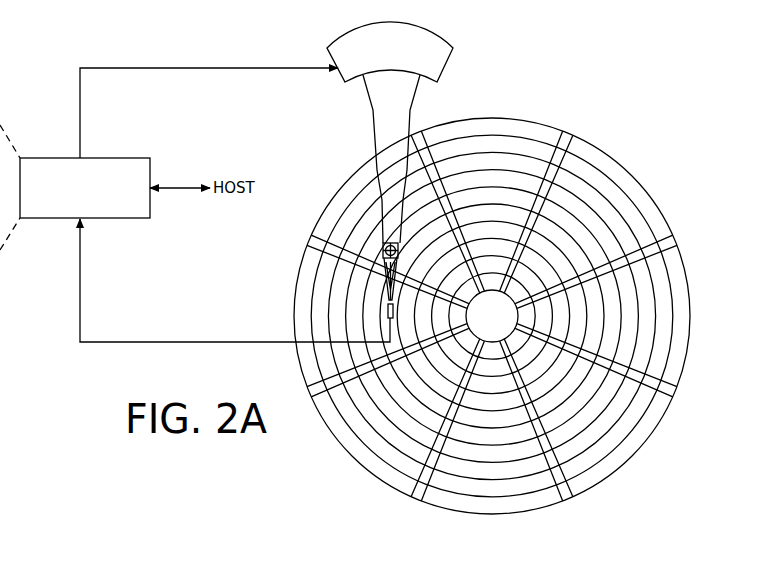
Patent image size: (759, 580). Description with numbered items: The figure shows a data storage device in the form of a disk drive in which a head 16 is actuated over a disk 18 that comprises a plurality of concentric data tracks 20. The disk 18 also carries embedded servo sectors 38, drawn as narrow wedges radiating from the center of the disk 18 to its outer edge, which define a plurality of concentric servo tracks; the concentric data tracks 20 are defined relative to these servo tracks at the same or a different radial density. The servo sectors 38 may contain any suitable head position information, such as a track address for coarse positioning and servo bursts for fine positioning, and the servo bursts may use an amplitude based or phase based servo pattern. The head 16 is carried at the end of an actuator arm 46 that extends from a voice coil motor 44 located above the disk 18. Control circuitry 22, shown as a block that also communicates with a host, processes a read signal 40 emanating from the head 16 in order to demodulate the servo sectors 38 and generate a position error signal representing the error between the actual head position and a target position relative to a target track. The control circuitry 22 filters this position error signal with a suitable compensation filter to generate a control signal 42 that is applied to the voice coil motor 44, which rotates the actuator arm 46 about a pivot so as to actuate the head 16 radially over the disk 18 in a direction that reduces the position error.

The head 16 is at (385, 312).
The disk 18 is at (629, 162).
The data tracks 20 is at (495, 141).
The control circuitry 22 is at (117, 158).
The servo sectors 38 is at (433, 142).
The read signal 40 is at (174, 342).
The control signal 42 is at (80, 119).
The voice coil motor 44 is at (347, 78).
The actuator arm 46 is at (376, 146).